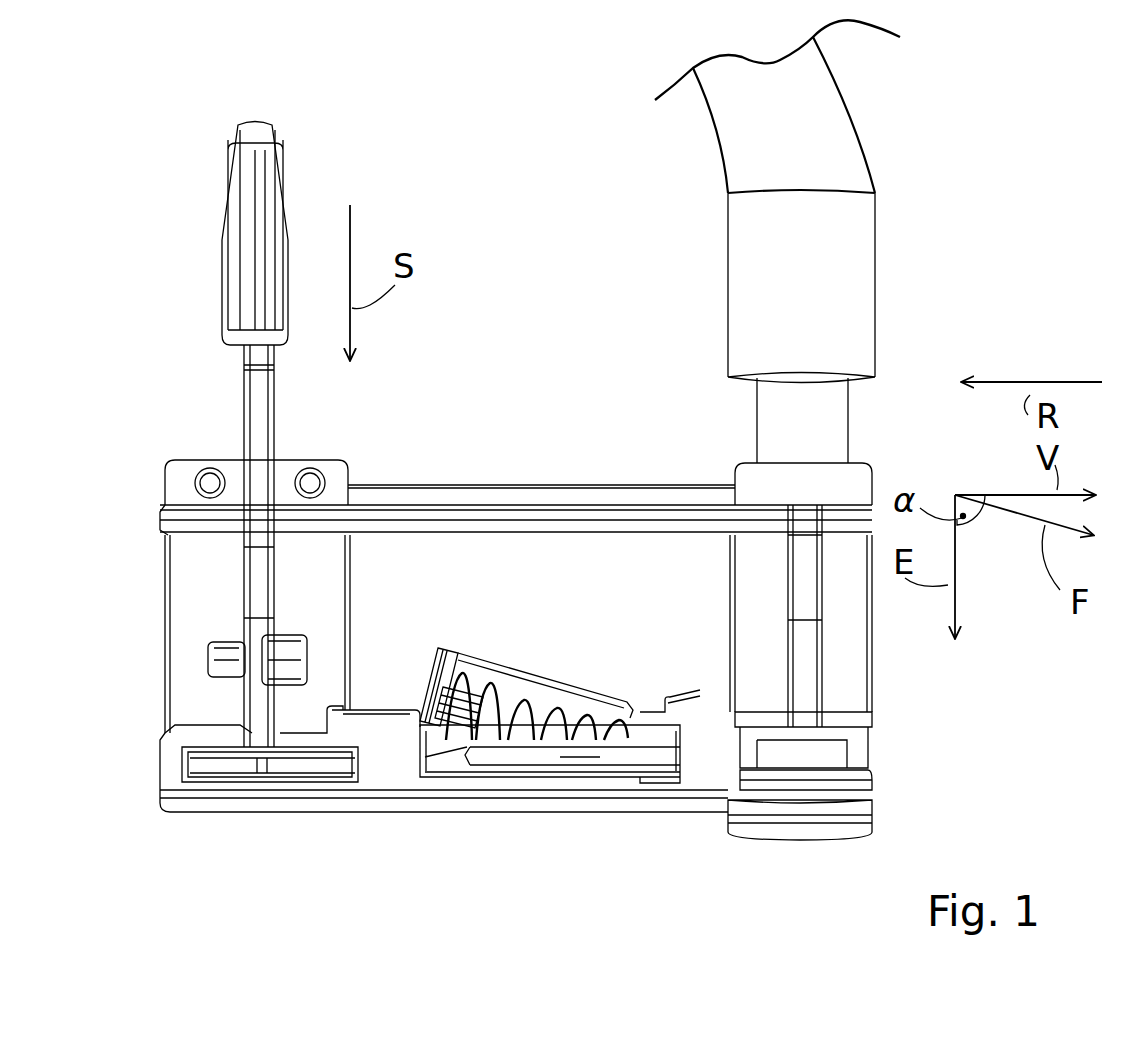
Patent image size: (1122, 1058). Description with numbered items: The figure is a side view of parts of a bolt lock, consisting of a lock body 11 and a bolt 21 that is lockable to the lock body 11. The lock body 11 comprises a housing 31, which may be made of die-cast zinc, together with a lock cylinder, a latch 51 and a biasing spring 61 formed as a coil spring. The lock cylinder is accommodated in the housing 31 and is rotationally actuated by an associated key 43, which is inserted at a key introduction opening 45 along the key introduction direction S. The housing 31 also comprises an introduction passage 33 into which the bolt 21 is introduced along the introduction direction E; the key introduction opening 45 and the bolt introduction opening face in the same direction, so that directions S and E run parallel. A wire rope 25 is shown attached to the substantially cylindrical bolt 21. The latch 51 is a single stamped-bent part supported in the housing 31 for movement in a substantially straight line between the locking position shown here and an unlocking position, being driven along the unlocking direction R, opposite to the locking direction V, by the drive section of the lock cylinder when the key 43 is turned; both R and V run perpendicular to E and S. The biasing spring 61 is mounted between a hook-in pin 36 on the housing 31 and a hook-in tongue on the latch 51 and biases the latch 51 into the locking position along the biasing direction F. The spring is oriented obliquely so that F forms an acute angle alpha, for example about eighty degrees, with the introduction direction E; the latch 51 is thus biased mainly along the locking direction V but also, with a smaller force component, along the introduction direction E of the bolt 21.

The lock body 11 is at (498, 866).
The bolt 21 is at (936, 272).
The wire rope 25 is at (833, 138).
The housing 31 is at (495, 558).
The introduction passage 33 is at (746, 458).
The hook-in pin 36 is at (463, 702).
The key 43 is at (253, 408).
The key introduction opening 45 is at (236, 450).
The latch 51 is at (488, 755).
The biasing spring 61 is at (562, 730).